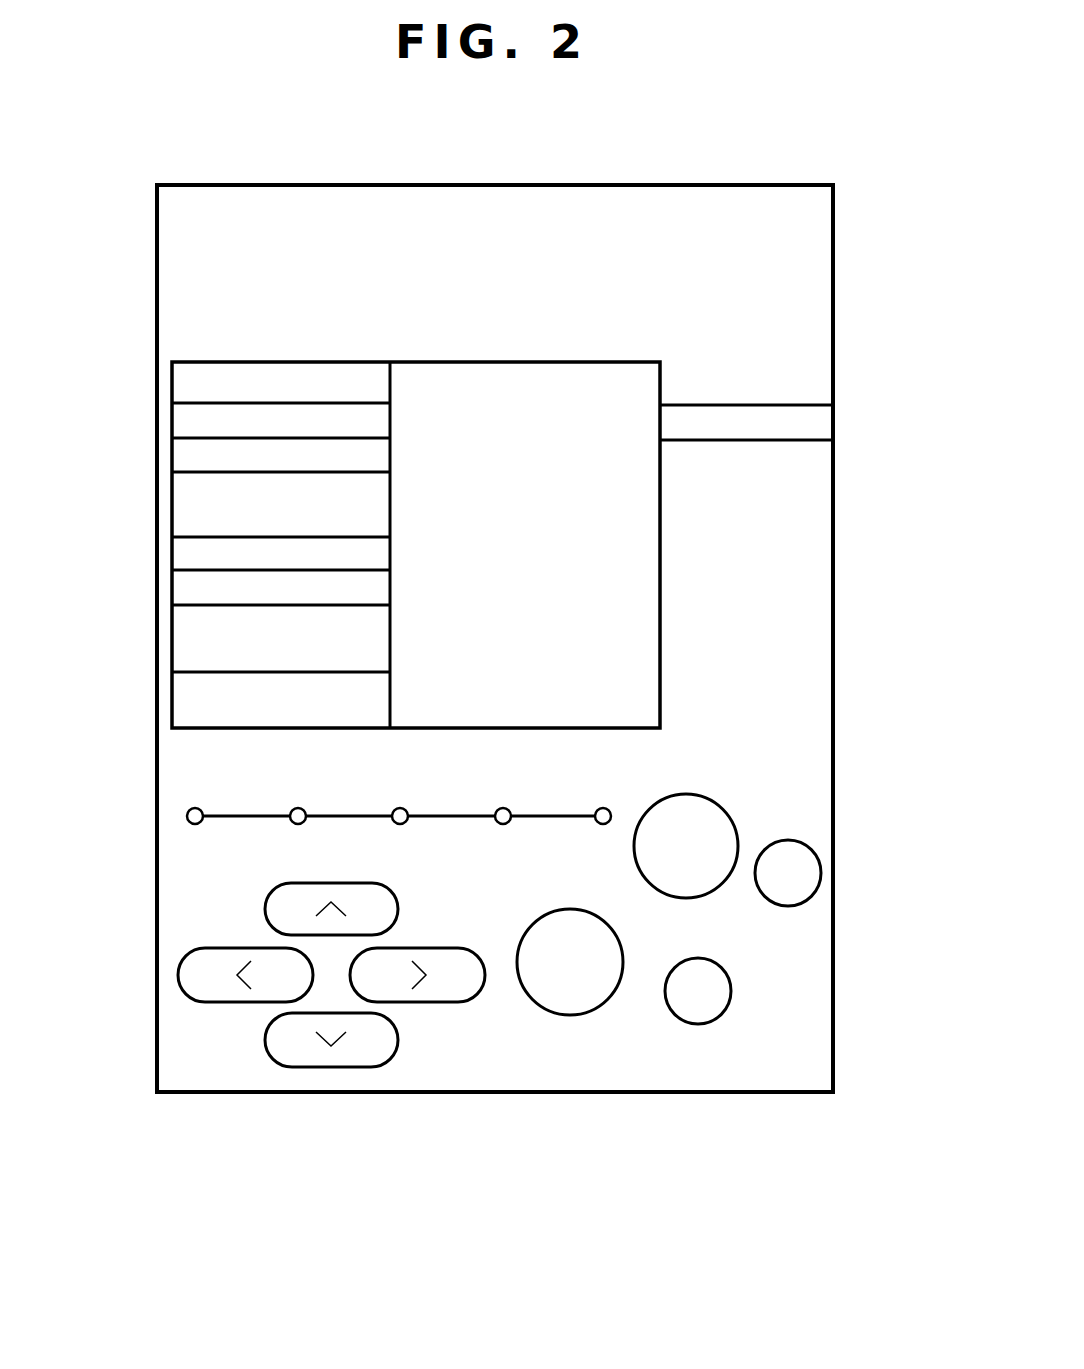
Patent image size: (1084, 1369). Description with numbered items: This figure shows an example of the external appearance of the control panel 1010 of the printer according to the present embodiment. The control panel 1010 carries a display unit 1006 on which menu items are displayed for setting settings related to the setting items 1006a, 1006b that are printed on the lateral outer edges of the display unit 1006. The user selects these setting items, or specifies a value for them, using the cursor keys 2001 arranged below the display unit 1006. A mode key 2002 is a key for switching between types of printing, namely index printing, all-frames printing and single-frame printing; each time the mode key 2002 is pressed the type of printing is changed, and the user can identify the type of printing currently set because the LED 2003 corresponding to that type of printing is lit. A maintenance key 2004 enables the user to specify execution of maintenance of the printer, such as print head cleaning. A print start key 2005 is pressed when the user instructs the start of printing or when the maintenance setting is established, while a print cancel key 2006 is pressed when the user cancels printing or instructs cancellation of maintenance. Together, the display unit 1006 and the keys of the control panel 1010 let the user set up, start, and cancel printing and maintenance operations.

The control panel 1010 is at (727, 185).
The display unit 1006 is at (585, 362).
The setting items 1006a is at (165, 362).
The setting items 1006b is at (788, 412).
The cursor keys 2001 is at (251, 1026).
The mode key 2002 is at (693, 830).
The LED 2003 is at (612, 832).
The maintenance key 2004 is at (792, 868).
The print start key 2005 is at (570, 984).
The print cancel key 2006 is at (702, 1004).